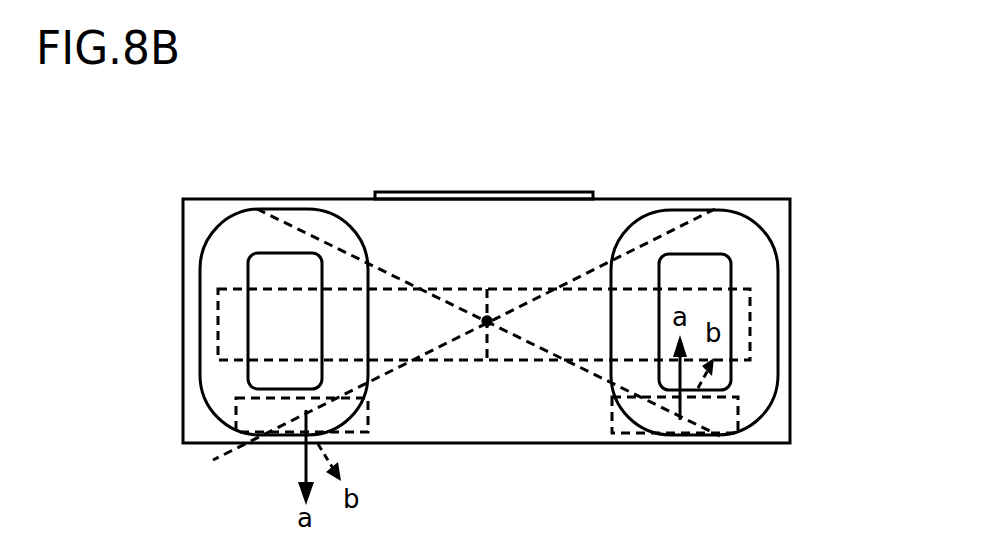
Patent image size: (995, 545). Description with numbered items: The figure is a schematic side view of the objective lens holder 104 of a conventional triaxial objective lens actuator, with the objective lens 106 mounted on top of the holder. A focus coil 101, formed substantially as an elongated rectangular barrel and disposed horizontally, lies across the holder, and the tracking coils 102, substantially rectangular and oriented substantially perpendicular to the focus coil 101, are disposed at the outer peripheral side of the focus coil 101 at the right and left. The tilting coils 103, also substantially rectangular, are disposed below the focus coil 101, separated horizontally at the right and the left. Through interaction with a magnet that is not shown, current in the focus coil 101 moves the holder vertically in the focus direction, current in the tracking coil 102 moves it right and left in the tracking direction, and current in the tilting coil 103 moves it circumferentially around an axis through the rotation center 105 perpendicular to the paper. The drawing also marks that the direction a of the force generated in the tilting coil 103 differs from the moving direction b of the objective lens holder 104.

The focus coil 101 is at (449, 362).
The tracking coil 102 is at (215, 250).
The tilting coil 103 is at (238, 412).
The objective lens holder 104 is at (773, 218).
The rotation center 105 is at (489, 319).
The objective lens 106 is at (470, 192).